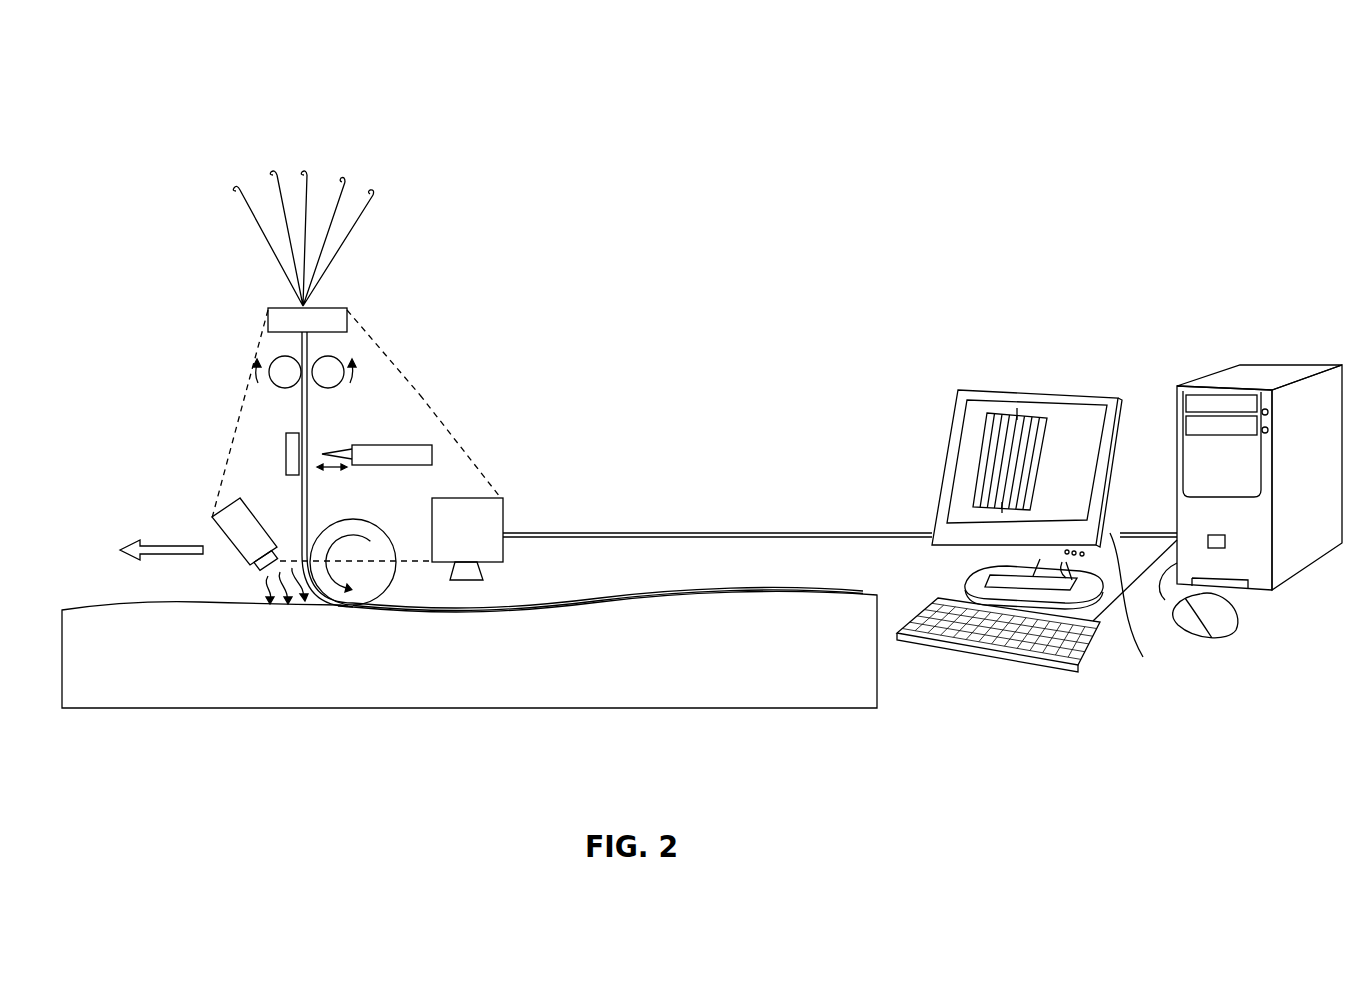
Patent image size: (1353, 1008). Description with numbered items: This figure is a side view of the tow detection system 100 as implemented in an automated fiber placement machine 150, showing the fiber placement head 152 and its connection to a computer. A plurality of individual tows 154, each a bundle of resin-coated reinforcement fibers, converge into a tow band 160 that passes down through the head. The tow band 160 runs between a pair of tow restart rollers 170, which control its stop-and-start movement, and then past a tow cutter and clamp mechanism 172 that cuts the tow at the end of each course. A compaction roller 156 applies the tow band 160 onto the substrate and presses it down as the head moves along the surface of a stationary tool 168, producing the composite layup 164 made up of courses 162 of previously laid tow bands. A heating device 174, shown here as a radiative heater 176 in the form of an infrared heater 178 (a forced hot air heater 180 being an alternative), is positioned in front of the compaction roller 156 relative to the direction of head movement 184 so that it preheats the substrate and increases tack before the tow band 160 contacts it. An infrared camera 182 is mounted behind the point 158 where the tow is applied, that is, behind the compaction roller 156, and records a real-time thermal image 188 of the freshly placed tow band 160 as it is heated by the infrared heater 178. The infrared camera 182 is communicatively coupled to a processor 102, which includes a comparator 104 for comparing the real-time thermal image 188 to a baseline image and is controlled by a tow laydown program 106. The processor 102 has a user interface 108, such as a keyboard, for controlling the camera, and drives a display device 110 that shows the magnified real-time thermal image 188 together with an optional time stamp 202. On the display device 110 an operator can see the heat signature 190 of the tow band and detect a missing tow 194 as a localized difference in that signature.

The tow detection system 100 is at (527, 500).
The processor 102 is at (1237, 365).
The comparator 104 is at (1303, 363).
The tow laydown program 106 is at (1182, 382).
The user interface 108 is at (987, 637).
The display device 110 is at (1037, 400).
The automated fiber placement machine 150 is at (387, 355).
The fiber placement head 152 is at (420, 395).
The tows 154 is at (358, 200).
The compaction roller 156 is at (352, 515).
The point 158 is at (342, 606).
The tow band 160 is at (302, 412).
The courses 162 is at (595, 597).
The composite layup 164 is at (110, 602).
The tool 168 is at (553, 696).
The tow restart rollers 170 is at (327, 390).
The tow cutter and clamp mechanism 172 is at (420, 445).
The heating device 174 is at (222, 508).
The radiative heater 176 is at (242, 500).
The infrared heater 178 is at (240, 550).
The forced hot air heater 180 is at (268, 540).
The infrared camera 182 is at (485, 535).
The direction of head movement 184 is at (160, 547).
The real-time thermal image 188 is at (987, 430).
The heat signature 190 is at (978, 455).
The missing tow 194 is at (980, 477).
The time stamp 202 is at (1146, 604).